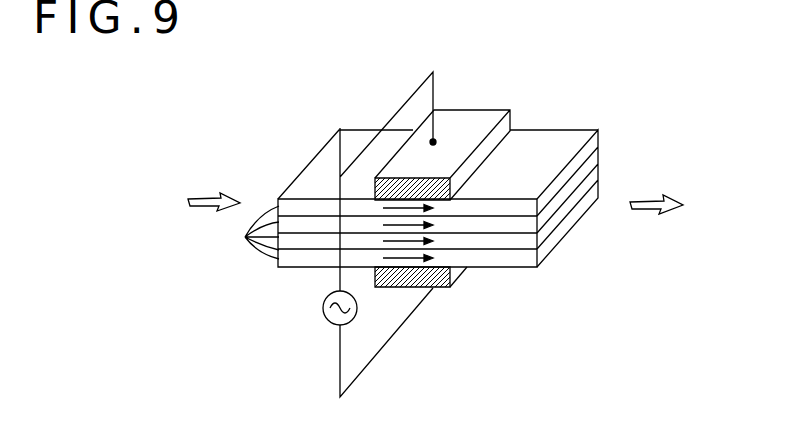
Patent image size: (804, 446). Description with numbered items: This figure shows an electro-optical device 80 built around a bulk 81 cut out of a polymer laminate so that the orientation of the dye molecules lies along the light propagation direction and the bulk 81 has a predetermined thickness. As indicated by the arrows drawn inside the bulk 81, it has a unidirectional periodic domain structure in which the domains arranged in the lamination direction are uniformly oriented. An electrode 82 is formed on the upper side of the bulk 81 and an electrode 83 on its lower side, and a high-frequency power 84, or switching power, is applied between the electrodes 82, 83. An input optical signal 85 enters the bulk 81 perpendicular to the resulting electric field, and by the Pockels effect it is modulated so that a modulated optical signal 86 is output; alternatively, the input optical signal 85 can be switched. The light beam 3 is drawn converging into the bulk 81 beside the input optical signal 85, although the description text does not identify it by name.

The optical modulator 80 is at (303, 112).
The substrate / waveguide body 81 is at (565, 130).
The upper electrode 82 is at (477, 123).
The lower electrode 83 is at (437, 290).
The AC power source 84 is at (325, 320).
The incident light direction 85 is at (212, 200).
The output light direction 86 is at (650, 202).
The light beam 3 is at (249, 232).